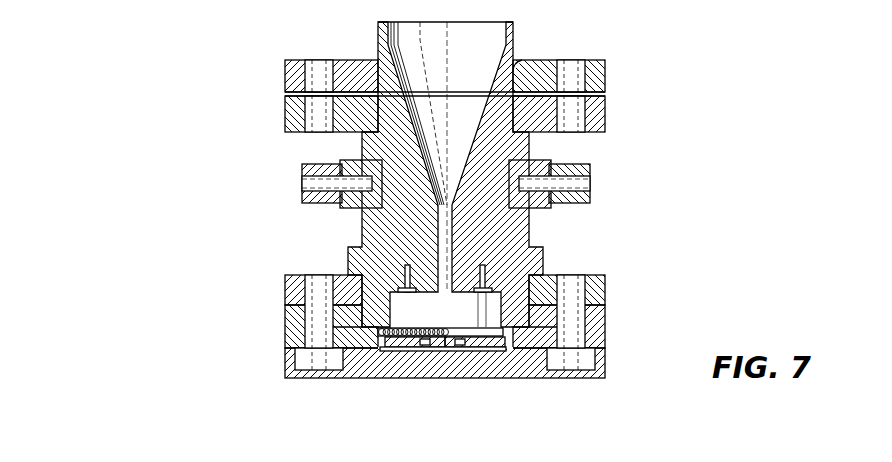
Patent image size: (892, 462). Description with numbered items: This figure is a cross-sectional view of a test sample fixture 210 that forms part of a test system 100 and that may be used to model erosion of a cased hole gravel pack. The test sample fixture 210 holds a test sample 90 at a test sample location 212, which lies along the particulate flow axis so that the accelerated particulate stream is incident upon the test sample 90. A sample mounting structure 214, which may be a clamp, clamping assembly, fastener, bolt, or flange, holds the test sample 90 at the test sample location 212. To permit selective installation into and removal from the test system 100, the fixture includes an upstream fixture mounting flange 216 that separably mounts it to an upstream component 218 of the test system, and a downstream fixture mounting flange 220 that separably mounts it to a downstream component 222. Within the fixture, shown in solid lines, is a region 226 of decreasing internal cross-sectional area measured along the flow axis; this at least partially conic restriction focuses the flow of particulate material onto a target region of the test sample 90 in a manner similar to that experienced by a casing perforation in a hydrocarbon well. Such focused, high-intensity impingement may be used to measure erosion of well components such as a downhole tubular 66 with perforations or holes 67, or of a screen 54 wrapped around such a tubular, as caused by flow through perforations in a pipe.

The test system 100 is at (98, 151).
The test sample fixture 210 is at (228, 208).
The test sample location 212 is at (400, 375).
The sample mounting structure 214 is at (284, 336).
The upstream fixture mounting flange 216 is at (284, 118).
The upstream component 218 is at (257, 36).
The downstream fixture mounting flange 220 is at (284, 283).
The downstream component 222 is at (259, 396).
The region of decreasing internal cross-sectional area 226 is at (396, 60).
The screen 54 is at (505, 332).
The downhole tubular 66 is at (447, 348).
The holes 67 is at (418, 348).
The test sample 90 is at (487, 354).